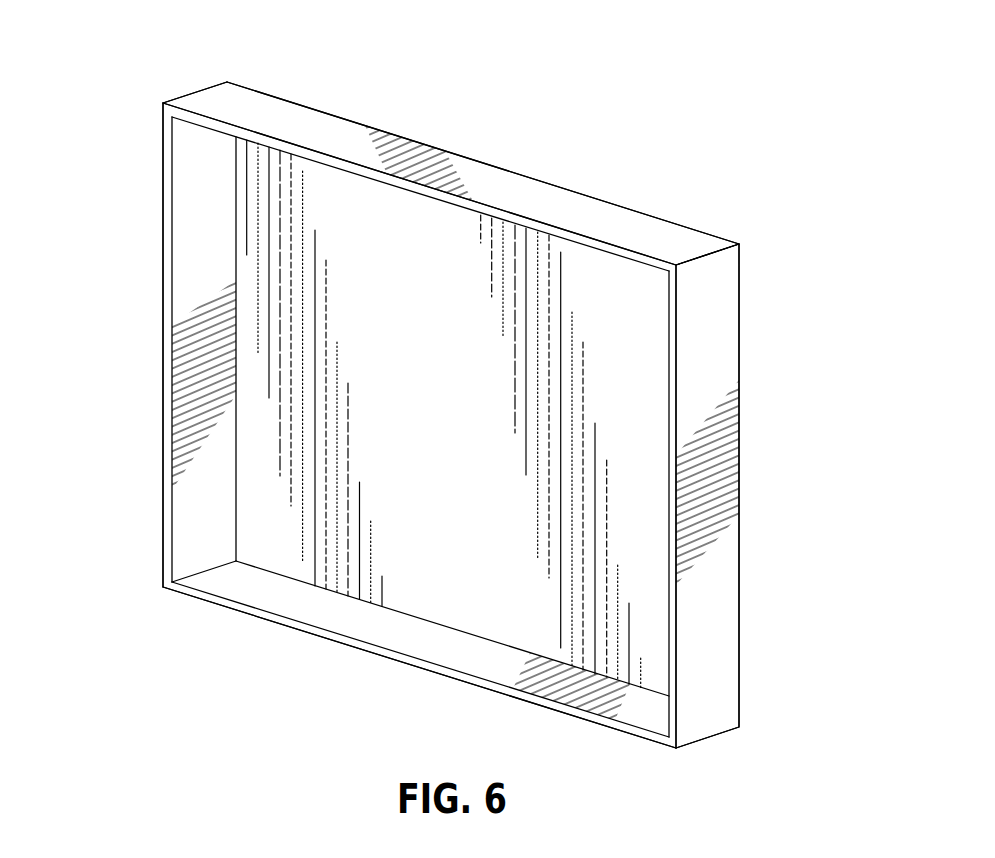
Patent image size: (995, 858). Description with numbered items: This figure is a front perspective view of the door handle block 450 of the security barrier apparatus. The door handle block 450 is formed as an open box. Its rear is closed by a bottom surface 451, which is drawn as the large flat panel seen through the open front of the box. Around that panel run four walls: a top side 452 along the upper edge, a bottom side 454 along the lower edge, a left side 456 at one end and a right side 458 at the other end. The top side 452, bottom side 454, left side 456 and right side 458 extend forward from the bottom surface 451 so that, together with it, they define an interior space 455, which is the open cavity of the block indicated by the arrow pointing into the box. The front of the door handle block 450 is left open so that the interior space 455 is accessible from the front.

The door handle block 450 is at (131, 53).
The bottom surface 451 is at (460, 423).
The top side 452 is at (583, 203).
The bottom side 454 is at (258, 599).
The interior space 455 is at (500, 557).
The left side 456 is at (178, 277).
The right side 458 is at (723, 337).